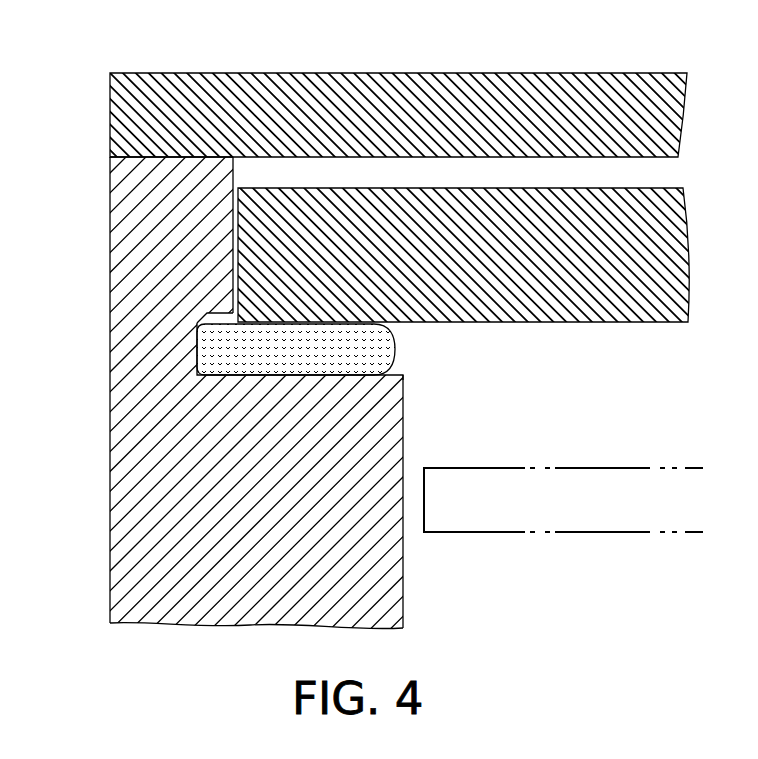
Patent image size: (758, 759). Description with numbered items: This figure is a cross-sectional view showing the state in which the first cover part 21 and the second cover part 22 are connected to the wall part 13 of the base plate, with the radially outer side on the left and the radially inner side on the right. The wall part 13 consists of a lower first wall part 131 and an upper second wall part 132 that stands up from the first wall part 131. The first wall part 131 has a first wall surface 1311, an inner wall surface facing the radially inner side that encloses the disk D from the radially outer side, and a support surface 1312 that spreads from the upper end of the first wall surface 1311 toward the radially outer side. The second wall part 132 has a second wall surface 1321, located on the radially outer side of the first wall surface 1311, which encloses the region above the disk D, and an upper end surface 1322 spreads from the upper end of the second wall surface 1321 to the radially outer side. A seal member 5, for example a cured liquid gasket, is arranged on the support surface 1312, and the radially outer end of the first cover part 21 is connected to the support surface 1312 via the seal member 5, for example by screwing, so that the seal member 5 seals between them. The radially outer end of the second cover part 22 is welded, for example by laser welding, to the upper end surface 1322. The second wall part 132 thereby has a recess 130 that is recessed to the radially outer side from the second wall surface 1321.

The wall part 13 is at (379, 337).
The first wall part 131 is at (379, 405).
The second wall part 132 is at (379, 327).
The first wall surface 1311 is at (403, 565).
The support surface 1312 is at (397, 362).
The recess 130 is at (214, 350).
The second wall surface 1321 is at (240, 184).
The upper end surface 1322 is at (163, 157).
The first cover part 21 is at (637, 323).
The second cover part 22 is at (345, 100).
The seal member 5 is at (395, 343).
The disk D is at (497, 532).